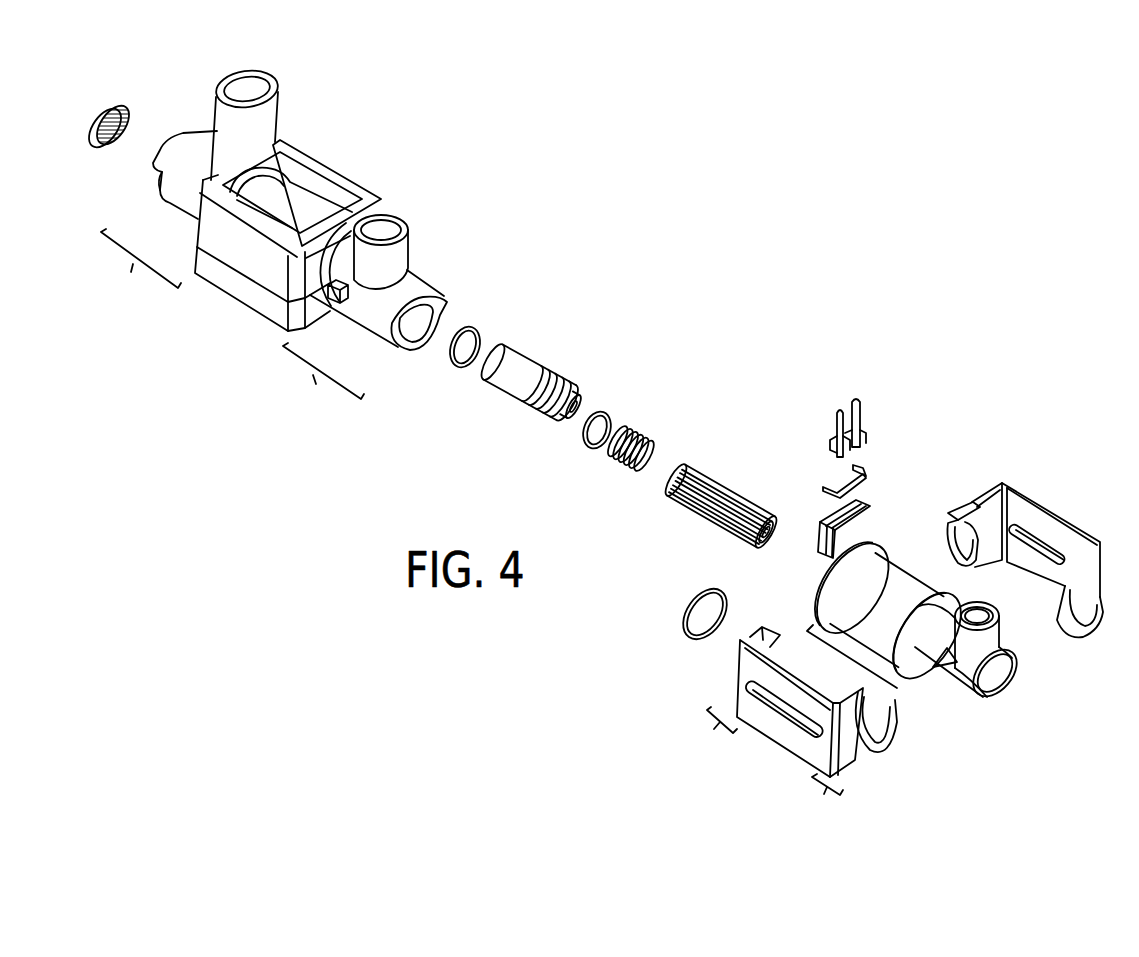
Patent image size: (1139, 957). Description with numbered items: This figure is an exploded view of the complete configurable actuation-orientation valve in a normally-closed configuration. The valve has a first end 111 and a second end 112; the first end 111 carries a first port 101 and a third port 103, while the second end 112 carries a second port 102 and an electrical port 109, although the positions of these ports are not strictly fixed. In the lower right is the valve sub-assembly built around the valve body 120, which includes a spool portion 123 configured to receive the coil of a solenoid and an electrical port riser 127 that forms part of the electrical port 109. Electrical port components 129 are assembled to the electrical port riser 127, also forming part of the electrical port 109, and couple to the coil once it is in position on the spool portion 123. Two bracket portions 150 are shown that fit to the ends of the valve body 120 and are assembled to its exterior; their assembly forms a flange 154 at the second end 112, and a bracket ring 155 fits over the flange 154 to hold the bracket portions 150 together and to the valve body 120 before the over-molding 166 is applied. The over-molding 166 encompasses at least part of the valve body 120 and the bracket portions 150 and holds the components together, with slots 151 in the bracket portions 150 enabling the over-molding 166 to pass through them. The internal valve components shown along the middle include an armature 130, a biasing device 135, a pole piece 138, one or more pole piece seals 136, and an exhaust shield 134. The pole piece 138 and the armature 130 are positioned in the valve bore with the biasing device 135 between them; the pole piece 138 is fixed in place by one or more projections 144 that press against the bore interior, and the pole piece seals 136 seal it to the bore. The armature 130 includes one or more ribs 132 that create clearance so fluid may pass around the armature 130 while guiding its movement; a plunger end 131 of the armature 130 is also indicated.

The first port 101 is at (423, 350).
The second port 102 is at (160, 173).
The third port 103 is at (393, 215).
The electrical port 109 is at (276, 76).
The first end 111 is at (563, 583).
The second end 112 is at (419, 495).
The valve body 120 is at (949, 697).
The spool portion 123 is at (843, 656).
The electrical port riser 127 is at (866, 517).
The electrical port components 129 is at (877, 395).
The armature 130 is at (727, 514).
The plunger end 131 is at (765, 572).
The ribs 132 is at (727, 533).
The exhaust shield 134 is at (104, 103).
The biasing device 135 is at (623, 464).
The pole piece seals 136 is at (461, 369).
The pole piece 138 is at (536, 372).
The projections 144 is at (556, 397).
The bracket portions 150 is at (1073, 522).
The slots 151 is at (792, 712).
The flange 154 is at (958, 512).
The bracket ring 155 is at (688, 612).
The over-molding 166 is at (232, 298).